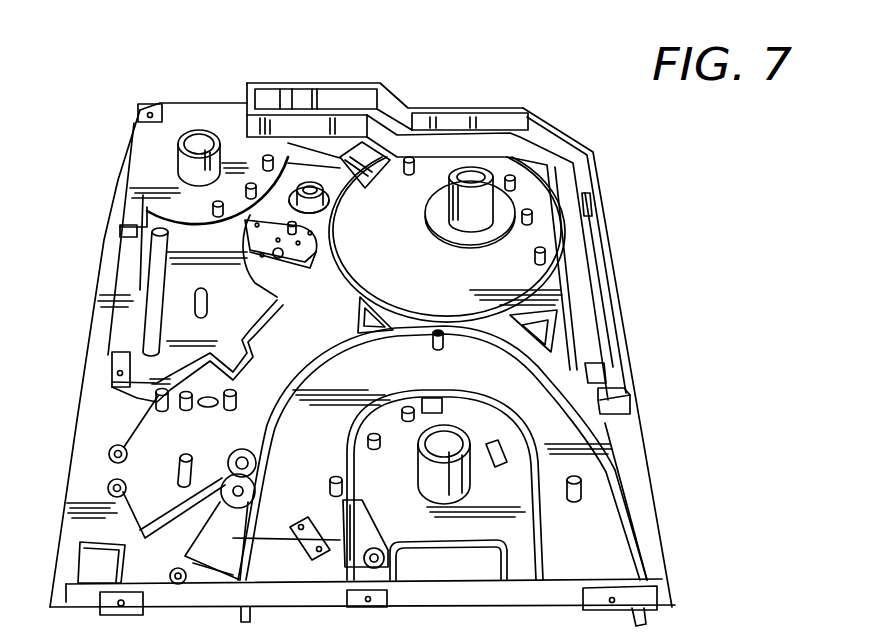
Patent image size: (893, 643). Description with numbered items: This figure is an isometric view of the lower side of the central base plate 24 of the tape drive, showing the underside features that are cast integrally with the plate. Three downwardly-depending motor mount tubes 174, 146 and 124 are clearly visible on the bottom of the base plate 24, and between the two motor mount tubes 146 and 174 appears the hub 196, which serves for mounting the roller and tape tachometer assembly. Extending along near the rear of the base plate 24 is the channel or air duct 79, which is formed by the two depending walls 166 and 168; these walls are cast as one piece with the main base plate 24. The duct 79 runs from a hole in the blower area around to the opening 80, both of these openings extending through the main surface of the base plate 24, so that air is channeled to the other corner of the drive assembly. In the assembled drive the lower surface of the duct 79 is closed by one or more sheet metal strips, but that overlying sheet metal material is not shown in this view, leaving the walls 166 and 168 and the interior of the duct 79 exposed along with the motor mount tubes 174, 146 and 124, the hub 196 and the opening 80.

The base plate 24 is at (508, 95).
The air duct 79 is at (331, 100).
The opening 80 is at (607, 380).
The motor mount tube 124 is at (423, 473).
The motor mount tube 146 is at (472, 213).
The depending wall 166 is at (567, 262).
The depending wall 168 is at (610, 268).
The motor mount tube 174 is at (182, 168).
The hub 196 is at (313, 208).